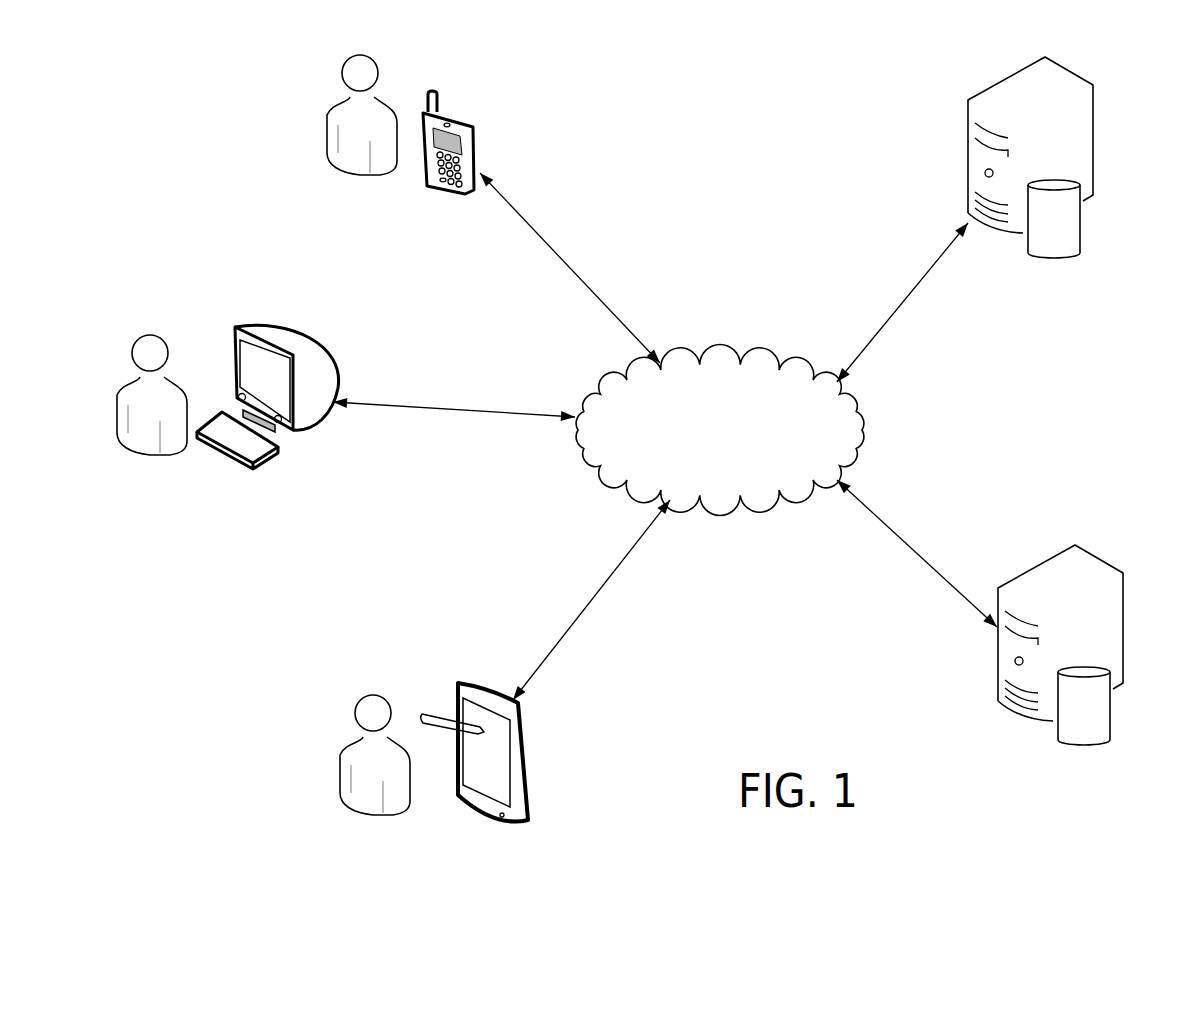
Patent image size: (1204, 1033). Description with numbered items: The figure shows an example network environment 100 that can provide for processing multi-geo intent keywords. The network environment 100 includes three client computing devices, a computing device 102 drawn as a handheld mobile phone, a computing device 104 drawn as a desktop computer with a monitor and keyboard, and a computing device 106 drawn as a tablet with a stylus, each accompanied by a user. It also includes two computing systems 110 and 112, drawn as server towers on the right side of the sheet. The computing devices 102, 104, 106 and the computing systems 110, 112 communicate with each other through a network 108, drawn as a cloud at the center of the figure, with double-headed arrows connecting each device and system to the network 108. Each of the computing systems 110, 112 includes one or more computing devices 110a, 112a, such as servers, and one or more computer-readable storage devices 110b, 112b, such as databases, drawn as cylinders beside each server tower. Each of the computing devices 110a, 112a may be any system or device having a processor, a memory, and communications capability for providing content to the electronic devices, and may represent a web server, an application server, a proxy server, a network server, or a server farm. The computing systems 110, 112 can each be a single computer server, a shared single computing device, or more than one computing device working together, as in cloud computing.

The network environment 100 is at (850, 62).
The computing device 102 is at (462, 115).
The computing device 104 is at (303, 336).
The computing device 106 is at (468, 682).
The network 108 is at (718, 360).
The computing system 110 is at (944, 198).
The computing device 110a is at (1065, 68).
The computer-readable storage device 110b is at (1080, 237).
The computing system 112 is at (986, 727).
The computing device 112a is at (1097, 556).
The computer-readable storage device 112b is at (1110, 725).